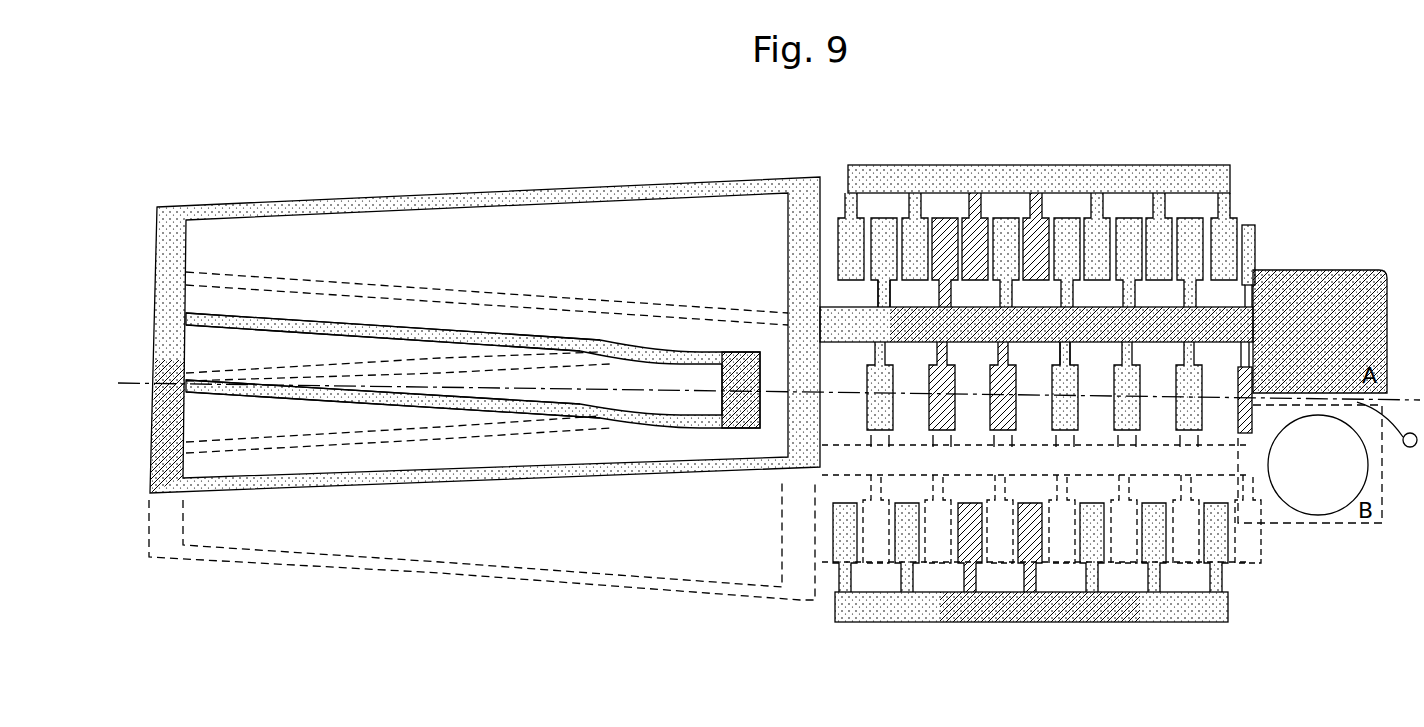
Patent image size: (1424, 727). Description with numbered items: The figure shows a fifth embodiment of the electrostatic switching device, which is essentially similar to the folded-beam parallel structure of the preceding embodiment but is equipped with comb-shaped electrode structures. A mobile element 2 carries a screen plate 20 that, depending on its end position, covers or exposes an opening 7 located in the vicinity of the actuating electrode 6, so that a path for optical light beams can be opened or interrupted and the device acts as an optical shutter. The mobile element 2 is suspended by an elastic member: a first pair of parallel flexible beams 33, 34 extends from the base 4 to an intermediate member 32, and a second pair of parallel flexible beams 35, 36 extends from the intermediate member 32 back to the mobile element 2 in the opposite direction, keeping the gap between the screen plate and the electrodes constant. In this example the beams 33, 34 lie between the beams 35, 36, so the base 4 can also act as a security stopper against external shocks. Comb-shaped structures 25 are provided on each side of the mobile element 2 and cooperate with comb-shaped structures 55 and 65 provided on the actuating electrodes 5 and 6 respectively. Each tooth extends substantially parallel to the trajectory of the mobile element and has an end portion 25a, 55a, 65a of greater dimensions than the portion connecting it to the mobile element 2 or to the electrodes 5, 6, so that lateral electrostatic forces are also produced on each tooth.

The mobile element 2 is at (1360, 284).
The base 4 is at (745, 365).
The actuating electrode 5 is at (1205, 183).
The actuating electrode 6 is at (1228, 622).
The opening 7 is at (1338, 497).
The screen plate 20 is at (1305, 283).
The comb-shaped structures 25 is at (1063, 340).
The end portion 25a is at (893, 283).
The intermediate member 32 is at (168, 233).
The flexible beam 33 is at (298, 320).
The flexible beam 34 is at (297, 392).
The flexible beam 35 is at (503, 196).
The flexible beam 36 is at (507, 475).
The comb-shaped structure 55 is at (977, 240).
The end portion 55a is at (1222, 243).
The comb-shaped structure 65 is at (953, 570).
The end portion 65a is at (1220, 556).